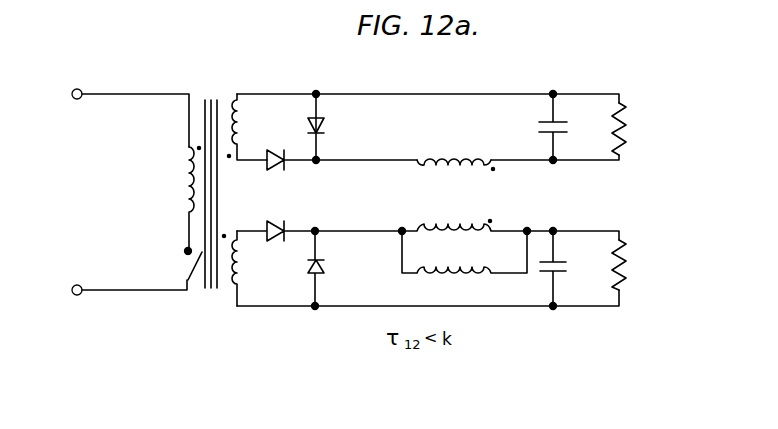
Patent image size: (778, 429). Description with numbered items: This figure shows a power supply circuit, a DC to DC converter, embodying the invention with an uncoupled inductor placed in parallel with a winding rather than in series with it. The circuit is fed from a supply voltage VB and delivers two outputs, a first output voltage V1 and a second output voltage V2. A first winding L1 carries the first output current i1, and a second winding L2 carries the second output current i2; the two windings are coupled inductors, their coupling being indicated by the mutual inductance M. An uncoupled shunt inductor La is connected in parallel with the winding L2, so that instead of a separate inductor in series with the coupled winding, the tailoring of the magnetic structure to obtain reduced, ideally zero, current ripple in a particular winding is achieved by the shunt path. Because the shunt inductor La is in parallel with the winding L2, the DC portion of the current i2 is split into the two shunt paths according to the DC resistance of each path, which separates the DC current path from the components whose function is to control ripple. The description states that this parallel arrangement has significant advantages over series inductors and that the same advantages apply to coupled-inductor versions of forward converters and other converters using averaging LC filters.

The battery supply voltage input VB is at (50, 118).
The first secondary output current i1 is at (404, 138).
The first output inductor L1 is at (456, 147).
The mutual inductance coupling between L1 and L2 M is at (432, 168).
The first output voltage V1 is at (640, 97).
The second secondary output current i2 is at (380, 240).
The second output inductor coupled to L1 L2 is at (511, 239).
The auxiliary inductor in parallel with L2 La is at (511, 282).
The second output voltage V2 is at (637, 232).